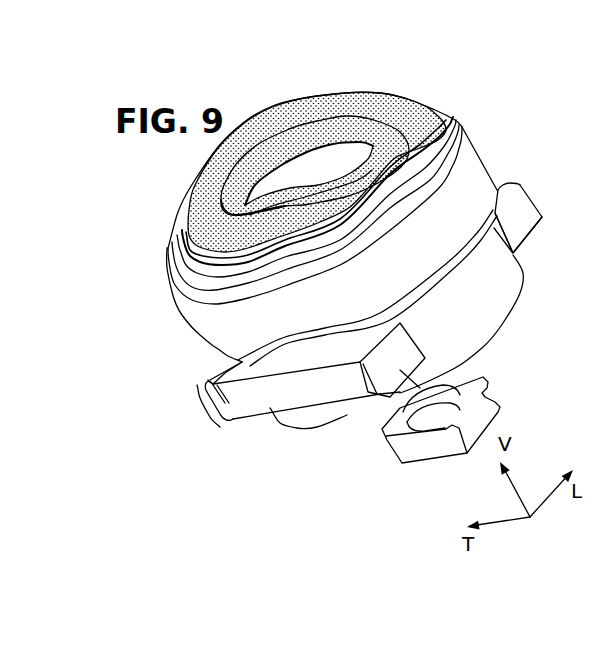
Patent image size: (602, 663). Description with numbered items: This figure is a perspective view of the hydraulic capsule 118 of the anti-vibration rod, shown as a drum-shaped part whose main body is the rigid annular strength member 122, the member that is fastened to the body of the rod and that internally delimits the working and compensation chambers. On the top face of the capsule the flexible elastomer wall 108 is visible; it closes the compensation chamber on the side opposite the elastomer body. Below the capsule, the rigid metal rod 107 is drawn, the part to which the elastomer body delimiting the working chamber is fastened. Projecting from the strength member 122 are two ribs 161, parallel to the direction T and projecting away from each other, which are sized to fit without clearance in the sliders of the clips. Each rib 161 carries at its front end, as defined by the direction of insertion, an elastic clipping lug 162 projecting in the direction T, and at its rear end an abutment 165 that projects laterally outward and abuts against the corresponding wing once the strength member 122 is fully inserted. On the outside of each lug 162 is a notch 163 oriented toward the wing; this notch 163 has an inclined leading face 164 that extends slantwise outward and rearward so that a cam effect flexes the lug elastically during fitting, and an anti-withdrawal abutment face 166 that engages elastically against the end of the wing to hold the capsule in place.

The rigid metal rod 107 is at (488, 391).
The flexible elastomer wall 108 is at (374, 100).
The hydraulic capsule 118 is at (500, 96).
The rigid annular strength member 122 is at (303, 418).
The rib 161 is at (501, 187).
The elastic clipping lug 162 is at (226, 372).
The notch 163 is at (196, 372).
The inclined leading face 164 is at (218, 401).
The abutment 165 is at (527, 193).
The anti-withdrawal abutment face 166 is at (225, 413).